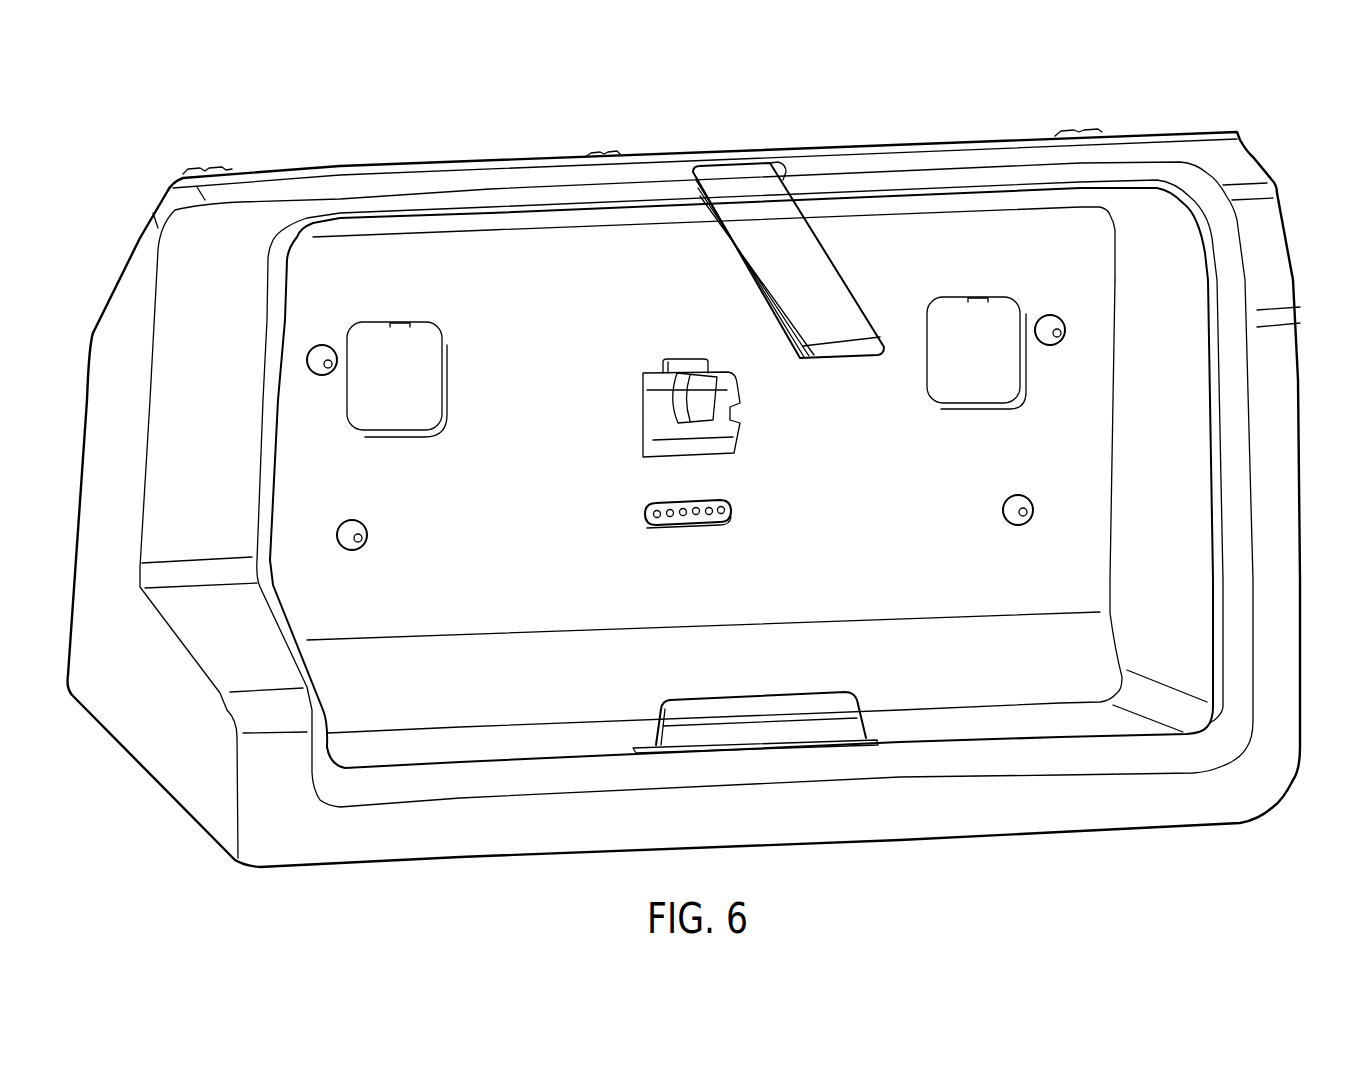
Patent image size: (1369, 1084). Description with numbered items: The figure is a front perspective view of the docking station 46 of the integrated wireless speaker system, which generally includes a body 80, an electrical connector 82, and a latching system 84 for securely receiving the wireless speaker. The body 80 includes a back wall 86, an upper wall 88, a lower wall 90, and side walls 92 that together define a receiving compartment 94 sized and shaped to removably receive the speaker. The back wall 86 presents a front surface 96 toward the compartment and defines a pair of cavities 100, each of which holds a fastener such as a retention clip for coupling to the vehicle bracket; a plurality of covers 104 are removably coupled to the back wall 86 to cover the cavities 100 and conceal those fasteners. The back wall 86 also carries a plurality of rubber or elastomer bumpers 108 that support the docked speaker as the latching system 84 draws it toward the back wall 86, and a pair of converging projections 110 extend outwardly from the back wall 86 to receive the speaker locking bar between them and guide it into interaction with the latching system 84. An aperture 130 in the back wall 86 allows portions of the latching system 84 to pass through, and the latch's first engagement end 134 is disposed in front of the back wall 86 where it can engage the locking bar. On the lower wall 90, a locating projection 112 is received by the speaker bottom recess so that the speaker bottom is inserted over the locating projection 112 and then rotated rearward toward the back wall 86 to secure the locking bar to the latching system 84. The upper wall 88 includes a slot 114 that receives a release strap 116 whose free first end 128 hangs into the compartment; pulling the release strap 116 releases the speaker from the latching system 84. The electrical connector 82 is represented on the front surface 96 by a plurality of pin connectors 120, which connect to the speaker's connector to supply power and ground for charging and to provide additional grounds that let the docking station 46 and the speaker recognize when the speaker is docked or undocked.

The docking station 46 is at (1290, 135).
The body 80 is at (162, 181).
The electrical connector 82 is at (632, 543).
The latching system 84 is at (750, 413).
The back wall 86 is at (742, 506).
The upper wall 88 is at (512, 218).
The lower wall 90 is at (470, 748).
The side walls 92 is at (278, 471).
The receiving compartment 94 is at (415, 620).
The front surface 96 is at (1090, 364).
The cavities 100 is at (403, 321).
The covers 104 is at (431, 384).
The bumpers 108 is at (320, 347).
The converging projections 110 is at (648, 393).
The locating projection 112 is at (800, 712).
The slot 114 is at (774, 165).
The release strap 116 is at (813, 256).
The pin connectors 120 is at (730, 504).
The free first end 128 is at (850, 347).
The aperture 130 is at (677, 362).
The first engagement end 134 is at (713, 398).